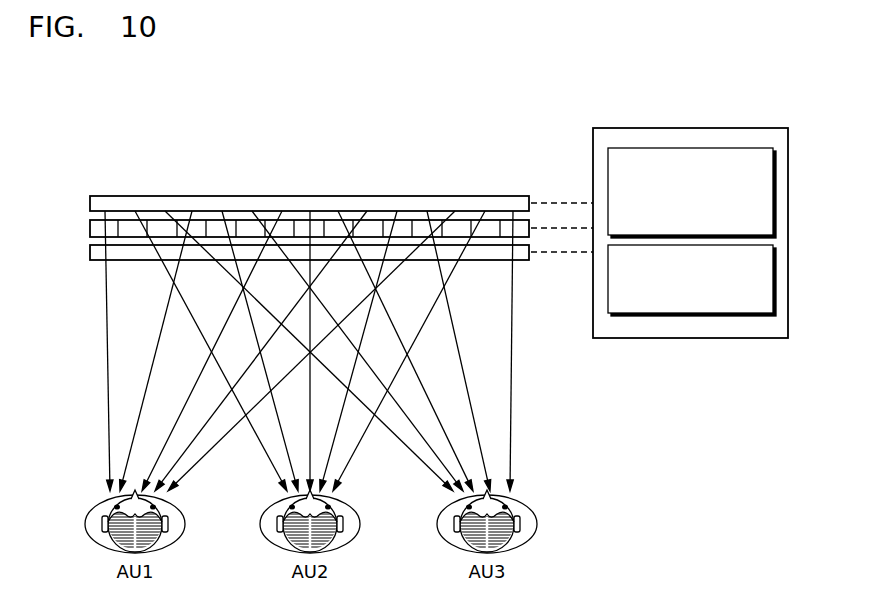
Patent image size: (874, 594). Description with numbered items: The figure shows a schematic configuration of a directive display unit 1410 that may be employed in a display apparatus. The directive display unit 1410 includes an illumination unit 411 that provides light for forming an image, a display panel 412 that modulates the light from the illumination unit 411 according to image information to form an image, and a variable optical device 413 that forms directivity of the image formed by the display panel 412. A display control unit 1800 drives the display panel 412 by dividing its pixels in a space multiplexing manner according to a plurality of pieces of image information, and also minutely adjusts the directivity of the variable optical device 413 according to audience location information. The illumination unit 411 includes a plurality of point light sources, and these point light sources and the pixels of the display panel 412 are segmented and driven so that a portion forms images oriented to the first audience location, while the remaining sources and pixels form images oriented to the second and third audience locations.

The directive display unit 1410 is at (640, 75).
The display control unit 1800 is at (698, 128).
The illumination unit 411 is at (93, 204).
The display panel 412 is at (93, 229).
The variable optical device 413 is at (93, 253).